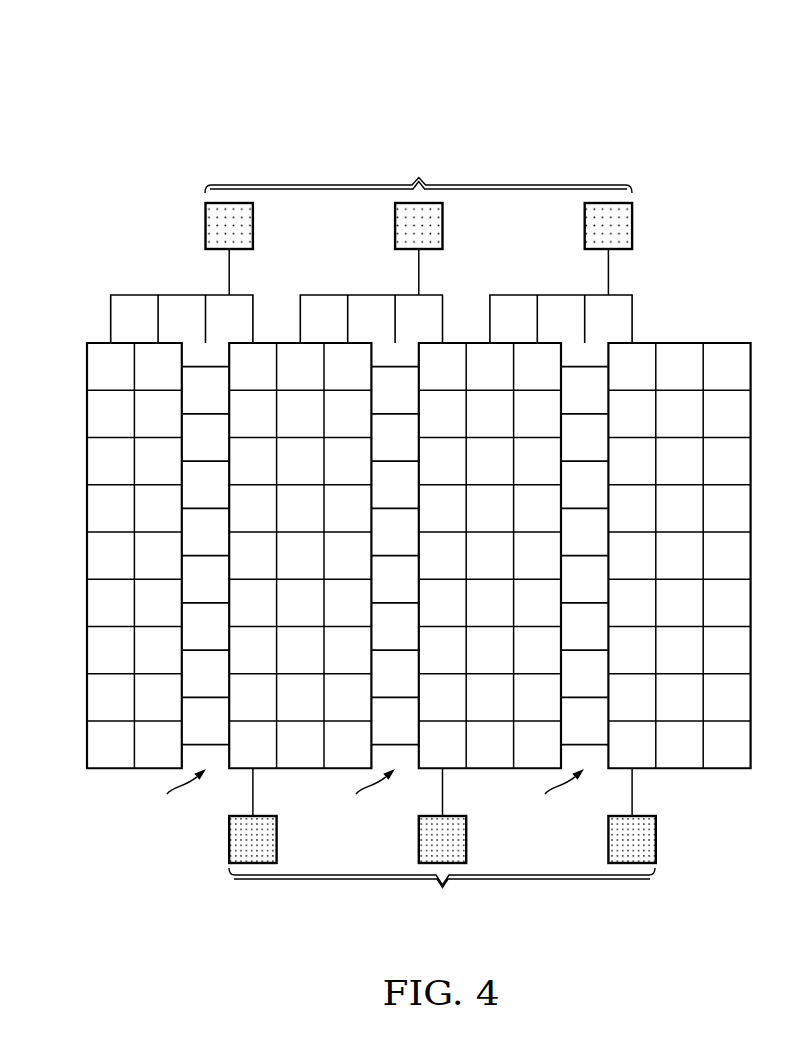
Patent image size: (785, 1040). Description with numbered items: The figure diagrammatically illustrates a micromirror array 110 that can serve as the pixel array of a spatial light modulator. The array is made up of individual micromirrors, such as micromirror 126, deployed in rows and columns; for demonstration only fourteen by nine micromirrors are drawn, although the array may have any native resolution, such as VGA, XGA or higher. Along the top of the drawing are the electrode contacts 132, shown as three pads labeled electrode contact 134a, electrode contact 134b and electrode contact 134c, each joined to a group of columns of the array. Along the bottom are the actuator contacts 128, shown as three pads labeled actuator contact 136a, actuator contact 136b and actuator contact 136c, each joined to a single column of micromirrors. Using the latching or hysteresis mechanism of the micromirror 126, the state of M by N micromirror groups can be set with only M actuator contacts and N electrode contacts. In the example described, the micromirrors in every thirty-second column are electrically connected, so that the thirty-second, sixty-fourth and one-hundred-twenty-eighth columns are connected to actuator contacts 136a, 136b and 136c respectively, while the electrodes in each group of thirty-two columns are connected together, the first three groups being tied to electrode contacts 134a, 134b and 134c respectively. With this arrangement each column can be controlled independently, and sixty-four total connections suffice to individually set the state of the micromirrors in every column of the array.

The micromirror array 110 is at (161, 64).
The micromirror 126 is at (97, 368).
The electrode contacts 132 is at (419, 204).
The electrode contact 134a is at (205, 228).
The electrode contact 134b is at (395, 229).
The electrode contact 134c is at (632, 228).
The actuator contacts 128 is at (441, 860).
The actuator contact 136a is at (229, 840).
The actuator contact 136b is at (419, 840).
The actuator contact 136c is at (656, 840).